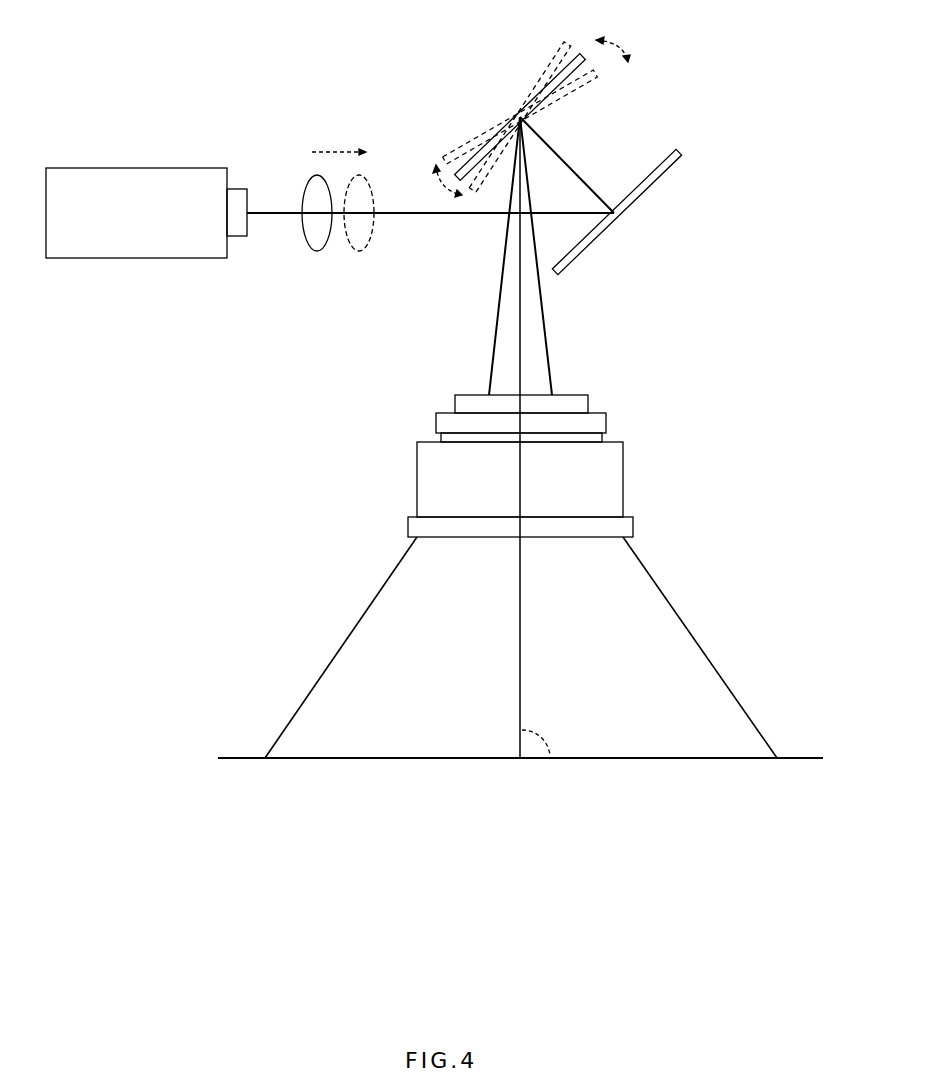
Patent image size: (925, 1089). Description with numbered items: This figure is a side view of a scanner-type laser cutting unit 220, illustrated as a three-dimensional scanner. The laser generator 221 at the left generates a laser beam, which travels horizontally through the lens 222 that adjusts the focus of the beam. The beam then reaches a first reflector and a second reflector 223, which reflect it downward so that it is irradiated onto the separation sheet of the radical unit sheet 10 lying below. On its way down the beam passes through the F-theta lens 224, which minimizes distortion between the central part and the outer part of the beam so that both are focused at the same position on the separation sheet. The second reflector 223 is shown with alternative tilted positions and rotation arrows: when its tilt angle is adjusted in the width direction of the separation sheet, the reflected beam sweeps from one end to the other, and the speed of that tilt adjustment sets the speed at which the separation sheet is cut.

The laser cutting unit 220 is at (772, 238).
The laser generator 221 is at (135, 166).
The lens 222 is at (315, 174).
The second reflector 223 is at (548, 66).
The F-theta lens 224 is at (624, 478).
The radical unit sheet 10 is at (797, 756).